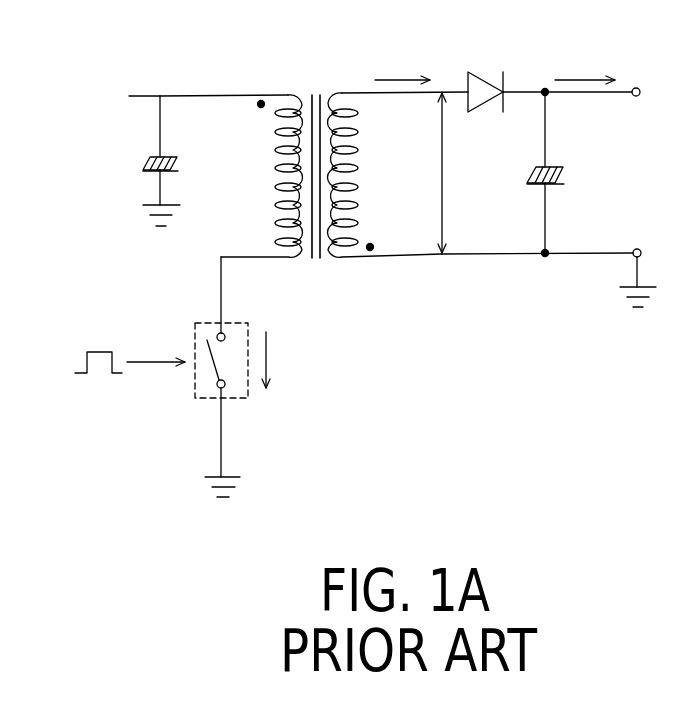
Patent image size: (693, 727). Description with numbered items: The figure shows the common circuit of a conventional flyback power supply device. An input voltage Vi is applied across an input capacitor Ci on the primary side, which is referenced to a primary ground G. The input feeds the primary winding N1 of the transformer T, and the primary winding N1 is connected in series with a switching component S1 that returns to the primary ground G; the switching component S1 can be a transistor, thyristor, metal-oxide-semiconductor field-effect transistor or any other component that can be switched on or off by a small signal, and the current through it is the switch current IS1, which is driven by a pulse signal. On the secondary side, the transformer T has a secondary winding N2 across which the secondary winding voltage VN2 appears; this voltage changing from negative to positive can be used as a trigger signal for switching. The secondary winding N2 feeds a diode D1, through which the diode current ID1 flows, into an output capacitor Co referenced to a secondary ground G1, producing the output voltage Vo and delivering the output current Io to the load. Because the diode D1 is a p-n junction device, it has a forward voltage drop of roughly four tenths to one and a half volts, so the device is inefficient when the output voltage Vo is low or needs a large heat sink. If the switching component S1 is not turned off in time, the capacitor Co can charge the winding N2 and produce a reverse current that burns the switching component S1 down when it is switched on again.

The input voltage Vi is at (128, 96).
The input capacitor Ci is at (177, 161).
The transformer T is at (331, 194).
The primary winding N1 is at (262, 176).
The inductor N2 is at (385, 175).
The diode current ID1 is at (402, 68).
The secondary winding voltage VN2 is at (442, 173).
The diode D1 is at (506, 79).
The output current Io is at (585, 67).
The output voltage Vo is at (609, 93).
The capacitor Co is at (565, 172).
The secondary ground G1 is at (649, 273).
The switching component S1 is at (178, 367).
The switch current IS1 is at (283, 360).
The primary ground G is at (231, 473).